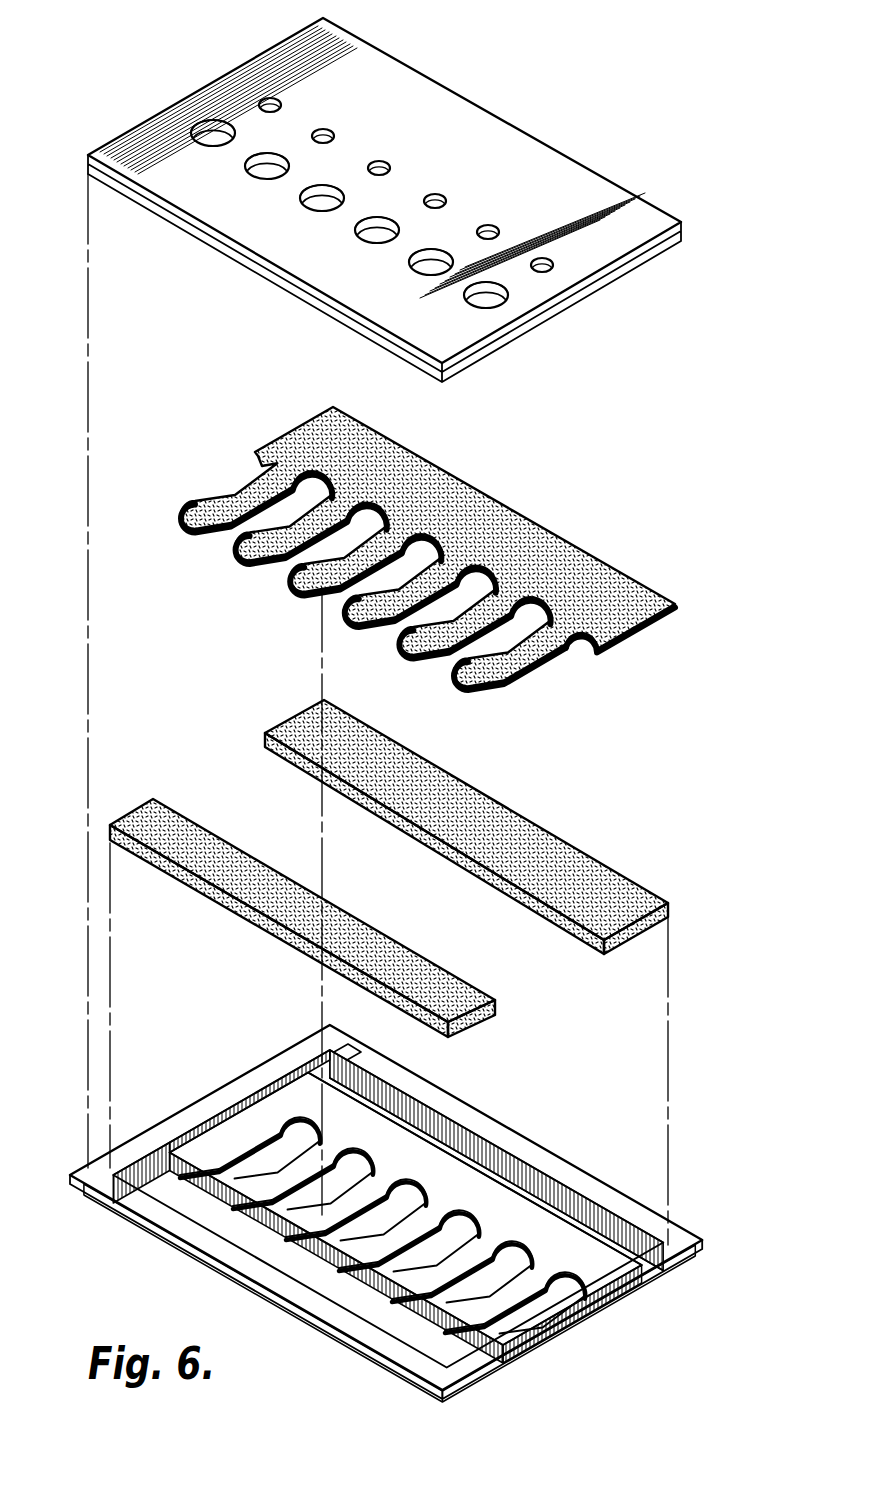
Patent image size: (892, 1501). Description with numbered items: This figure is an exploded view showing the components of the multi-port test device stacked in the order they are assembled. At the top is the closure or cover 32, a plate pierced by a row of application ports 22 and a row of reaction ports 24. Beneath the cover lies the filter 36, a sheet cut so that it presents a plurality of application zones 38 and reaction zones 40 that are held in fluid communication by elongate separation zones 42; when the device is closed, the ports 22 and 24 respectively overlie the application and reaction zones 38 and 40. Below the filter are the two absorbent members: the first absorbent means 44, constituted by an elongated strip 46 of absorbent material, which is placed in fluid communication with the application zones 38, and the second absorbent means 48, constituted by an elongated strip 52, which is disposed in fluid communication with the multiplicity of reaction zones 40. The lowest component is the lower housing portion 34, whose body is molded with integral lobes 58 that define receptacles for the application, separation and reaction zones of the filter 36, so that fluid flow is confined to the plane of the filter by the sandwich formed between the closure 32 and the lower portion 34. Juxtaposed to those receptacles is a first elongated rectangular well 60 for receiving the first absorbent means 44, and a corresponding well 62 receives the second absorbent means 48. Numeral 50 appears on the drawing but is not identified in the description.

The application ports 22 is at (262, 172).
The reaction ports 24 is at (323, 130).
The closure or cover 32 is at (384, 200).
The lower housing portion 34 is at (512, 1372).
The filter 36 is at (610, 556).
The application zones 38 is at (296, 593).
The reaction zones 40 is at (570, 653).
The separation zones 42 is at (545, 664).
The first absorbent means 44 is at (502, 1010).
The elongated strip 46 is at (440, 975).
The second absorbent means 48 is at (650, 876).
The recess end 50 is at (515, 1300).
The elongated strip 52 is at (530, 812).
The integrally molded lobes 58 is at (585, 1215).
The first elongated rectangular well 60 is at (375, 1322).
The well 62 is at (490, 1160).